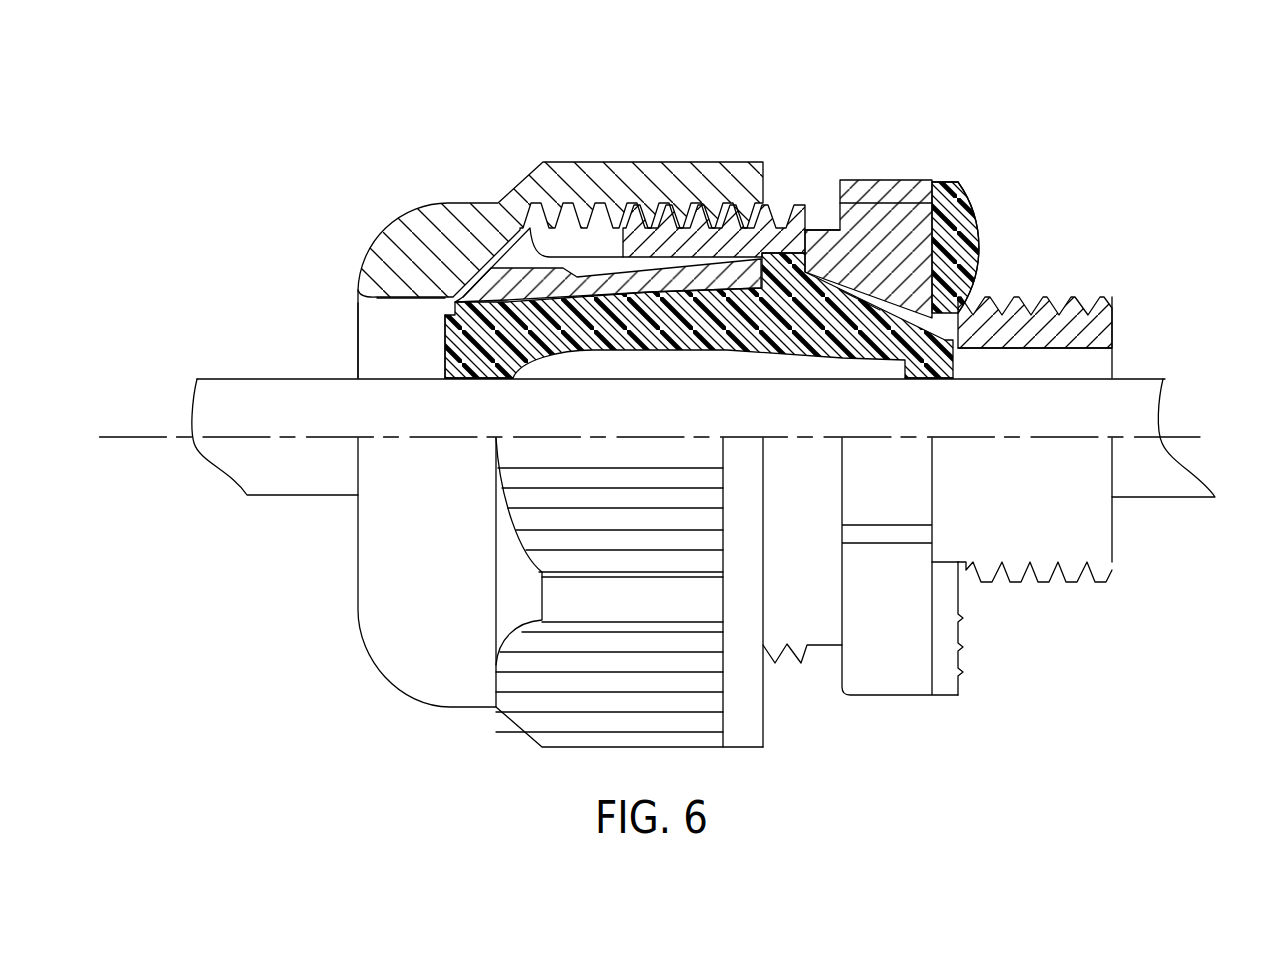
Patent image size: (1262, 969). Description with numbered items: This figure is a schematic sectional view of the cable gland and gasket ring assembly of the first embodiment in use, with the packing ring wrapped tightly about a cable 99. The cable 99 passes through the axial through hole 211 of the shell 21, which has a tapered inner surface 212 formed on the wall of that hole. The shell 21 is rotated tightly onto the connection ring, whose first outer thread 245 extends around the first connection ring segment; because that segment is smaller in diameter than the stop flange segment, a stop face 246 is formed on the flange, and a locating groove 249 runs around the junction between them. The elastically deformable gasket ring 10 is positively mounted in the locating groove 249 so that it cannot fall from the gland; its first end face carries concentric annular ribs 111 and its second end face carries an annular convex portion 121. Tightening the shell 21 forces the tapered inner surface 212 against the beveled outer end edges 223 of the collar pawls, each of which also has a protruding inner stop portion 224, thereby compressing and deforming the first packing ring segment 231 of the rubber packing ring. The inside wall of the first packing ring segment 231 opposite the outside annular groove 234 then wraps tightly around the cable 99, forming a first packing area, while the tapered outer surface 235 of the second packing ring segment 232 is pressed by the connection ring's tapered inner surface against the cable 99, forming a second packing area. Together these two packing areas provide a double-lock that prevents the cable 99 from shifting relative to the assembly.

The gasket ring 10 is at (940, 182).
The annular ribs 111 is at (905, 240).
The annular convex portion 121 is at (978, 243).
The shell 21 is at (408, 243).
The axial through hole 211 is at (403, 345).
The tapered inner surface 212 is at (577, 298).
The beveled outer end edge 223 is at (447, 320).
The protruding inner stop portion 224 is at (545, 270).
The first packing ring segment 231 is at (488, 380).
The second packing ring segment 232 is at (920, 363).
The outside annular groove 234 is at (503, 325).
The tapered outer surface 235 is at (872, 287).
The first outer thread 245 is at (1043, 303).
The stop face 246 is at (925, 282).
The locating groove 249 is at (826, 226).
The cable 99 is at (288, 473).